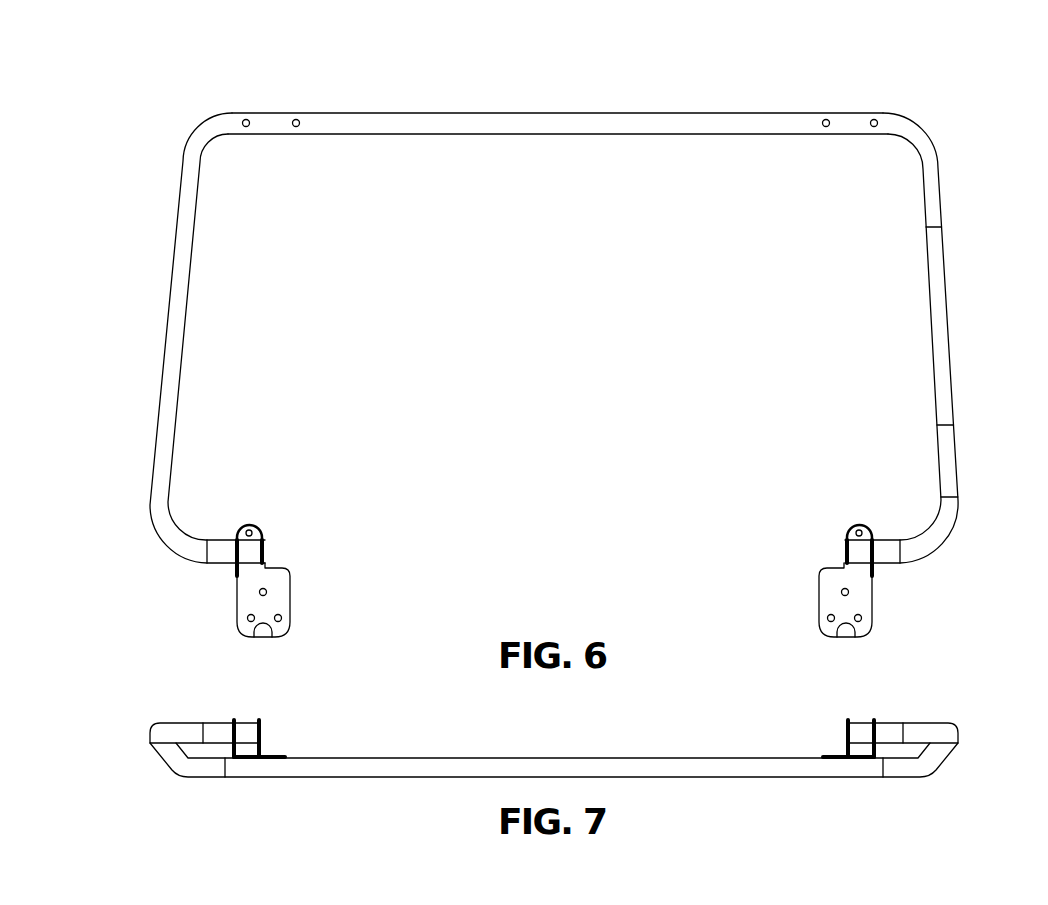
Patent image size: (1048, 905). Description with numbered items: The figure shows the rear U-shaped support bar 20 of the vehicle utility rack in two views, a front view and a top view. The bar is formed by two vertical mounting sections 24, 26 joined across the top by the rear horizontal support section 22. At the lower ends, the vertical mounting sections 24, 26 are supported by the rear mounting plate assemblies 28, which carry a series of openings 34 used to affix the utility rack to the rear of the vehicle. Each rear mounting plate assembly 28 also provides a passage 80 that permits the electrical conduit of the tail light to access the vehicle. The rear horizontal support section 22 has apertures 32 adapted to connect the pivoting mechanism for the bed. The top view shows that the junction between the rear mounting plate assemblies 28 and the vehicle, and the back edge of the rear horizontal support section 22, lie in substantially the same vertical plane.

In FIG. 6, the rear U-shaped support bar 20 is at (545, 84).
In FIG. 6, the rear horizontal support section 22 is at (622, 122).
In FIG. 7, the rear horizontal support section 22 is at (653, 770).
In FIG. 6, the vertical mounting section 24 is at (950, 323).
In FIG. 7, the vertical mounting section 24 is at (958, 748).
In FIG. 6, the vertical mounting section 26 is at (176, 323).
In FIG. 7, the vertical mounting section 26 is at (155, 745).
In FIG. 6, the rear mounting plate assembly 28 is at (268, 599).
In FIG. 7, the rear mounting plate assembly 28 is at (285, 756).
In FIG. 6, the aperture 32 is at (248, 119).
In FIG. 6, the opening 34 is at (250, 525).
In FIG. 6, the passage 80 is at (262, 632).